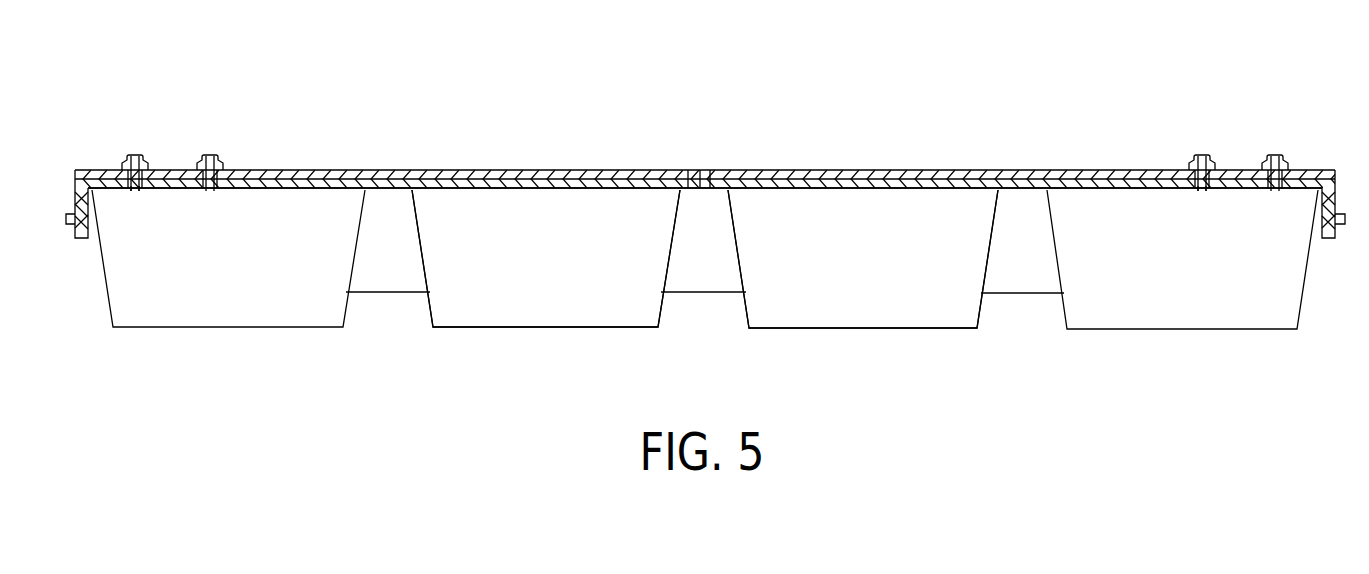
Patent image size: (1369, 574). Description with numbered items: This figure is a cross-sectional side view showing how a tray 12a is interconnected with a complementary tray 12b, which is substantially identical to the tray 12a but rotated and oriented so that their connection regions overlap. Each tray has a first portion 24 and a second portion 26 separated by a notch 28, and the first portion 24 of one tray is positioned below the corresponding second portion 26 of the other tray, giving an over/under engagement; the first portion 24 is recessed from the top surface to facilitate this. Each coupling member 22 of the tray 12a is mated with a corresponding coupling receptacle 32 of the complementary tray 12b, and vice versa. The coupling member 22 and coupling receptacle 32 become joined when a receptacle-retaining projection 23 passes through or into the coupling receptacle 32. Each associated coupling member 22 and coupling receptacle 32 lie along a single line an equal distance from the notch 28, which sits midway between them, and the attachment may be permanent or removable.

The tray 12a is at (430, 170).
The complementary tray 12b is at (805, 170).
The coupling member 22 is at (208, 153).
The receptacle-retaining projection 23 is at (222, 167).
The first portion 24 is at (563, 192).
The second portion 26 is at (536, 170).
The notch 28 is at (699, 170).
The coupling receptacle 32 is at (195, 190).